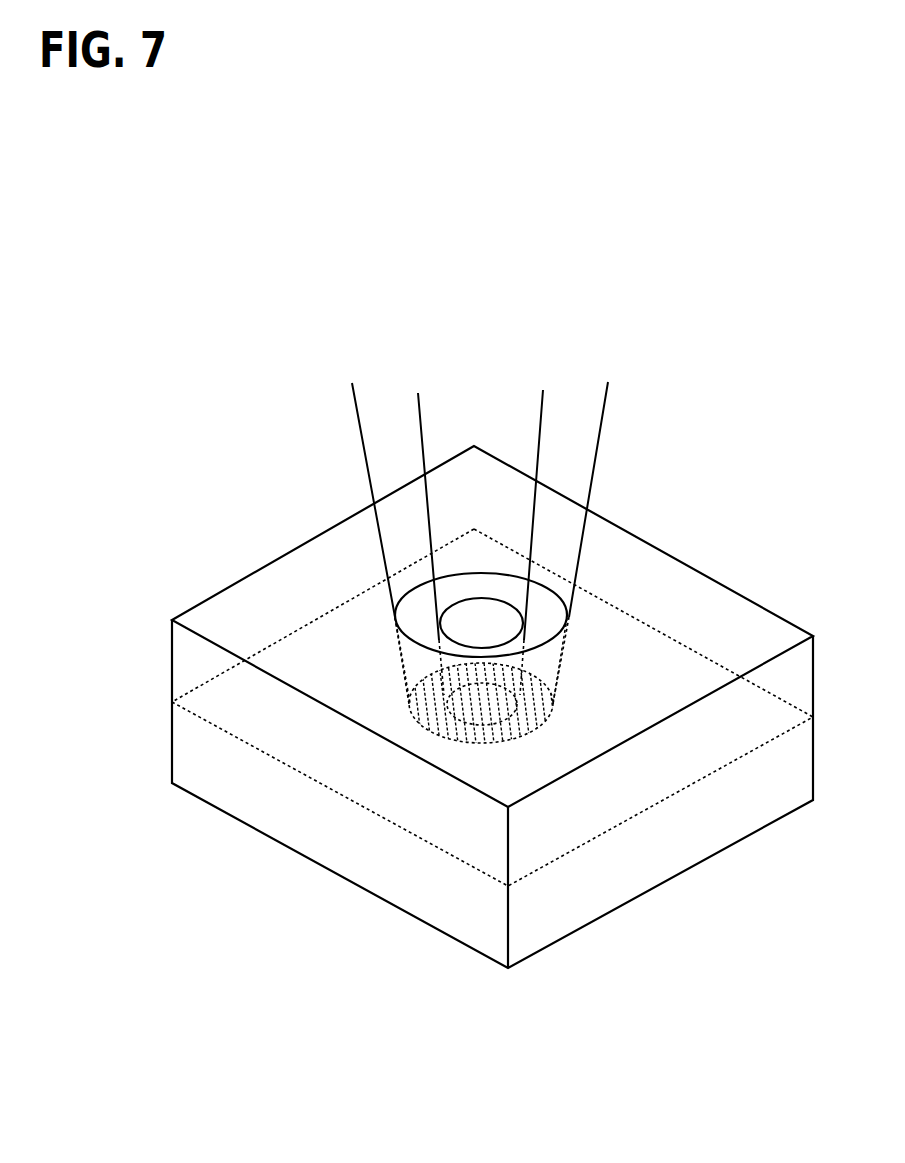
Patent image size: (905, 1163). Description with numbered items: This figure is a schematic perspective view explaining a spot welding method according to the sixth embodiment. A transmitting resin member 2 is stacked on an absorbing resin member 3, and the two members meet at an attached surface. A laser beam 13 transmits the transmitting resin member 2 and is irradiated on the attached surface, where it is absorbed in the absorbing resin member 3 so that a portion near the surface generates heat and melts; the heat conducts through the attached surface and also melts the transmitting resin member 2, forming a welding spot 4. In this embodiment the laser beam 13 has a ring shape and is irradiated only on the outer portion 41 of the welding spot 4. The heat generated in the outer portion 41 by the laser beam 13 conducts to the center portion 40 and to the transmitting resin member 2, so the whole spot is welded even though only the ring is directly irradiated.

The transmitting resin member 2 is at (213, 612).
The absorbing resin member 3 is at (203, 782).
The welding spot 4 is at (479, 684).
The laser beam 13 is at (367, 468).
The center portion 40 is at (510, 670).
The outer portion 41 is at (417, 690).